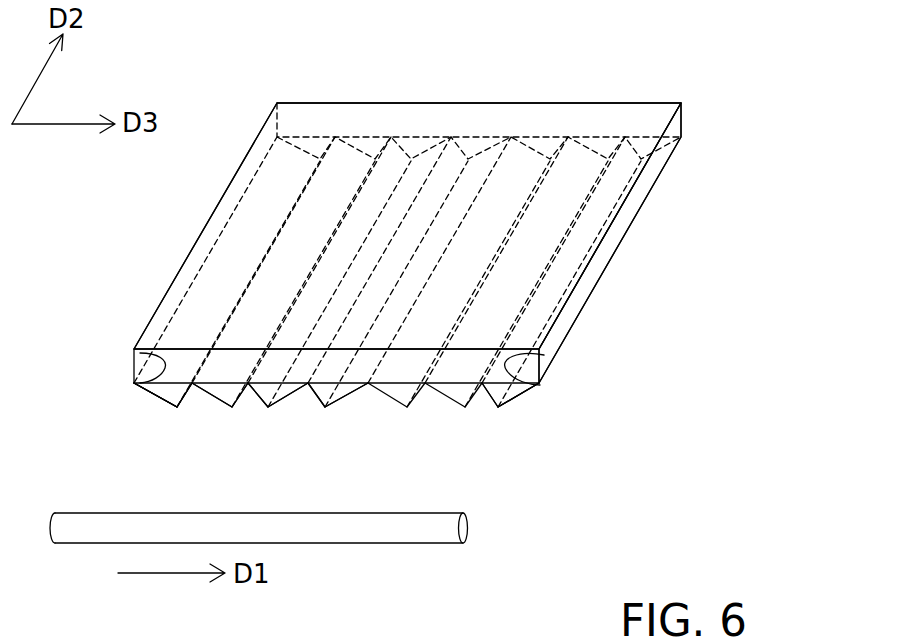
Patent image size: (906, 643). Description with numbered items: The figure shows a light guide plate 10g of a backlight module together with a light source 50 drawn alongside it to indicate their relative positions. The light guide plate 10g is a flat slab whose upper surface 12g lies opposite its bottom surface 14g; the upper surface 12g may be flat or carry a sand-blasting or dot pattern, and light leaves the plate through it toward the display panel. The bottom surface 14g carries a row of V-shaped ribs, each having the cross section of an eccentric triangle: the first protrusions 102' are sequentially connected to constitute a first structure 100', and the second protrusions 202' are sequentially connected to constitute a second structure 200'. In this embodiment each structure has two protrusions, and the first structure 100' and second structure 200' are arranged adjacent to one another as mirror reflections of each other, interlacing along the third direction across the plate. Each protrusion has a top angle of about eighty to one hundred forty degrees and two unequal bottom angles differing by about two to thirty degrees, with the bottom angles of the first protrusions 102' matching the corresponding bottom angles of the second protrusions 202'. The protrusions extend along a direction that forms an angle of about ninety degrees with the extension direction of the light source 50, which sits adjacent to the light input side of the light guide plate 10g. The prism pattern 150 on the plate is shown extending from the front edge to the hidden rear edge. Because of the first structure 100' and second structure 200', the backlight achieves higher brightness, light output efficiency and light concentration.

The light guide plate 10g is at (808, 34).
The upper surface 12g is at (608, 112).
The bottom surface 14g is at (618, 274).
The prism structure 150 is at (484, 131).
The first structure 100' is at (192, 443).
The second structure 200' is at (308, 443).
The first protrusion 102' is at (191, 421).
The second protrusion 202' is at (309, 421).
The light source 50 is at (468, 527).